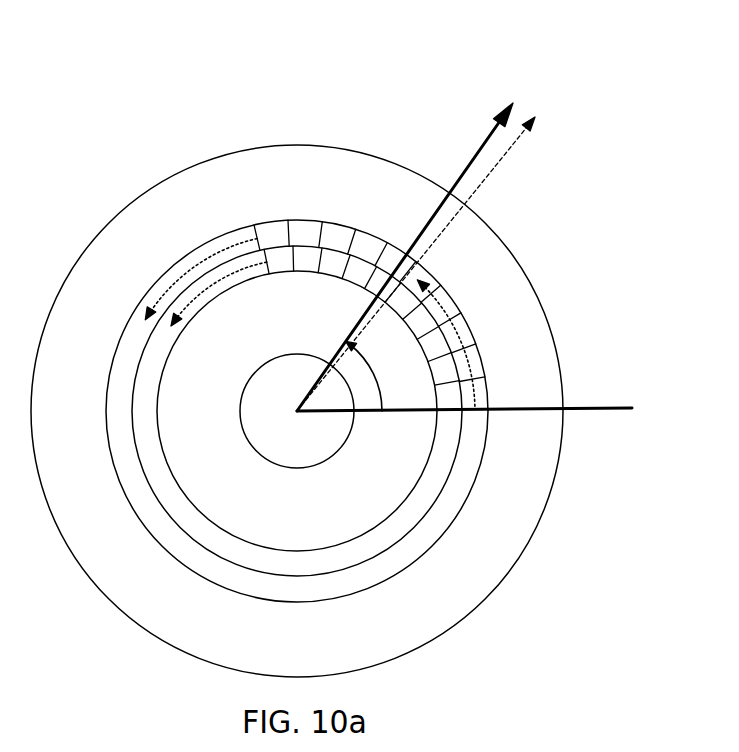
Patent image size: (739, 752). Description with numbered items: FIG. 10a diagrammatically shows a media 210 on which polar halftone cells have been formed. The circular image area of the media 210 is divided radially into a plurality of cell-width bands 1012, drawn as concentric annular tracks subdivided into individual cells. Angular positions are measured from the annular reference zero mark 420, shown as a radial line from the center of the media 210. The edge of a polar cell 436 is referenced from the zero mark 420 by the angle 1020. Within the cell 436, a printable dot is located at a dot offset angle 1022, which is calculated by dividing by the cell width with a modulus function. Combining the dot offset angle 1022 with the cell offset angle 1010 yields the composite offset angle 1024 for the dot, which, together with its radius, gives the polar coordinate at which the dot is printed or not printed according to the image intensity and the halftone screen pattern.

The media 210 is at (542, 515).
The annular reference zero mark 420 is at (585, 408).
The polar cell 436 is at (393, 250).
The bands 1012 is at (205, 247).
The dot offset angle 1022 is at (542, 106).
The cell offset angle 1010 is at (490, 175).
The angle 1020 is at (447, 308).
The composite offset angle 1024 is at (380, 377).